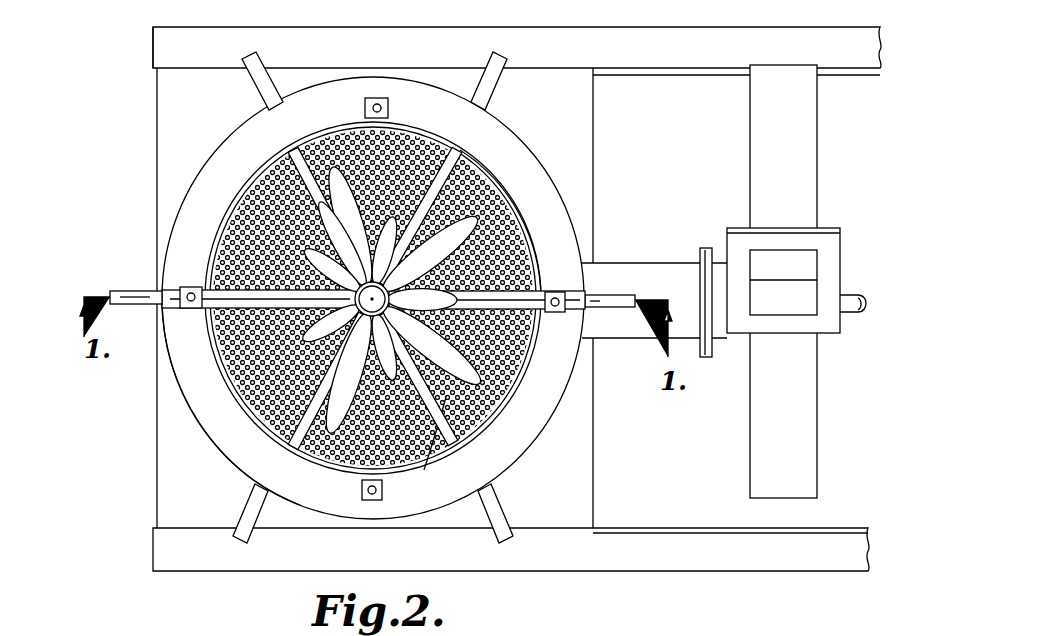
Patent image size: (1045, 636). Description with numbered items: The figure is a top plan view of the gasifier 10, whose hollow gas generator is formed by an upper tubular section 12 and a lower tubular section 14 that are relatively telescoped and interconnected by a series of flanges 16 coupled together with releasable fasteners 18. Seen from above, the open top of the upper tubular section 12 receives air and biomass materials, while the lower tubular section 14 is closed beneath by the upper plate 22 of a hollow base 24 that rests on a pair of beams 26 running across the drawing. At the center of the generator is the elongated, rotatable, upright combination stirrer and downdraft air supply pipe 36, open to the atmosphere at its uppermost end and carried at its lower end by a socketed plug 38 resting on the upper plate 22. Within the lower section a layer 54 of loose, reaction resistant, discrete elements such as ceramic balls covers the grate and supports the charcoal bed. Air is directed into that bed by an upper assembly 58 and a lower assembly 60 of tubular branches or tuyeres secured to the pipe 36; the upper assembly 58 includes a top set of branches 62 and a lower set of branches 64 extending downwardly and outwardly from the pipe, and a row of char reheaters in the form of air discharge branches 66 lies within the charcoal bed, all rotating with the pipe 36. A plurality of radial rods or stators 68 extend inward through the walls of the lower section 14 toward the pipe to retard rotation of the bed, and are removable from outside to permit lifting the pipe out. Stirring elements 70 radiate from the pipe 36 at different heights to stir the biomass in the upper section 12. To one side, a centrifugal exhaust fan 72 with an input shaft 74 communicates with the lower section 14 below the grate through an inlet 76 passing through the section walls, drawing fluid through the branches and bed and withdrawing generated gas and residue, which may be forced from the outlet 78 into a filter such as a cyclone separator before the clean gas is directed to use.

The gasifier 10 is at (190, 117).
The upper tubular section 12 is at (489, 145).
The lower tubular section 14 is at (212, 455).
The flanges 16 is at (388, 106).
The releasable fasteners 18 is at (362, 490).
The upper plate 22 is at (565, 442).
The hollow base 24 is at (596, 392).
The beams 26 is at (732, 65).
The combination stirrer and downdraft air supply pipe 36 is at (323, 360).
The socketed plug 38 is at (233, 282).
The layer of discrete elements 54 is at (233, 262).
The upper assembly of tubular branches 58 is at (497, 372).
The lower assembly of tubular branches 60 is at (392, 212).
The top set of branches 62 is at (508, 196).
The lower set of branches 64 is at (450, 308).
The air discharge branches 66 is at (490, 300).
The radial rods 68 is at (300, 392).
The stirring elements 70 is at (425, 462).
The centrifugal exhaust fan 72 is at (824, 121).
The input shaft 74 is at (866, 304).
The inlet 76 is at (674, 270).
The outlet 78 is at (790, 255).